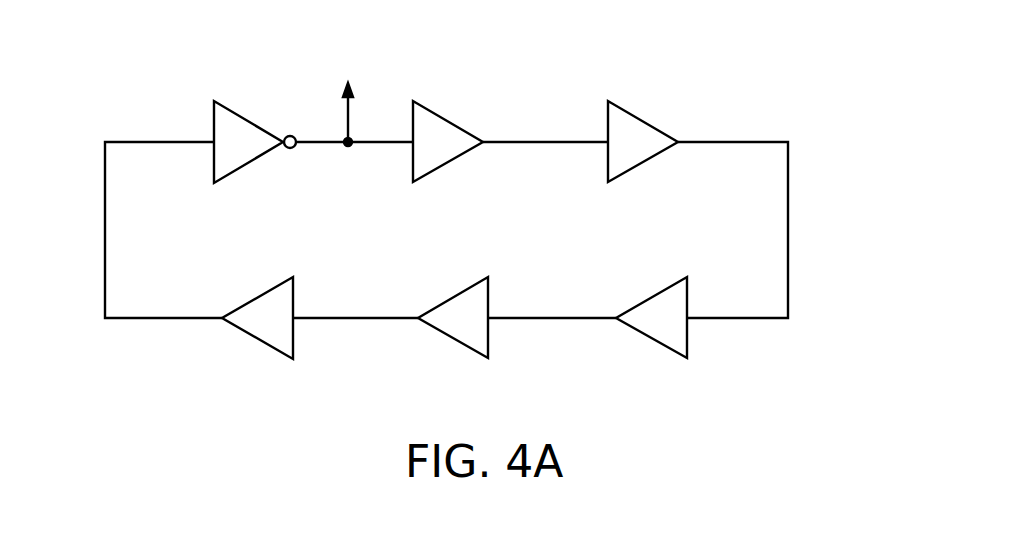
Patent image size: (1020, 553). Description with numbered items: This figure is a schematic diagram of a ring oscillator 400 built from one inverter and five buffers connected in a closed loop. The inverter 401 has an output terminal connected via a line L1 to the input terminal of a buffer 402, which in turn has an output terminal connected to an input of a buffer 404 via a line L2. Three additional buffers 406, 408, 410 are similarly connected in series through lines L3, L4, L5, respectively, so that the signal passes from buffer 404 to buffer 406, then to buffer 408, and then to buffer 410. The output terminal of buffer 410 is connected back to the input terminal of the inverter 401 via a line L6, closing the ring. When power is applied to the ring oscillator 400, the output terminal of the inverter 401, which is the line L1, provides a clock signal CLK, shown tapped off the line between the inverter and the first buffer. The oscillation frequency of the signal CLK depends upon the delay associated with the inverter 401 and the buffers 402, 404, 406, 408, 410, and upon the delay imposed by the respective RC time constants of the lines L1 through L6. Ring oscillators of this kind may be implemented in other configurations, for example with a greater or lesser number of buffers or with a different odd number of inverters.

The ring oscillator 400 is at (568, 78).
The inverter 401 is at (255, 142).
The buffer 402 is at (448, 141).
The buffer 404 is at (643, 141).
The buffer 406 is at (651, 317).
The buffer 408 is at (453, 317).
The buffer 410 is at (257, 318).
The line L1 is at (354, 131).
The line L2 is at (545, 129).
The line L3 is at (751, 230).
The line L4 is at (552, 304).
The line L5 is at (355, 304).
The line L6 is at (147, 230).
The clock signal CLK is at (353, 99).